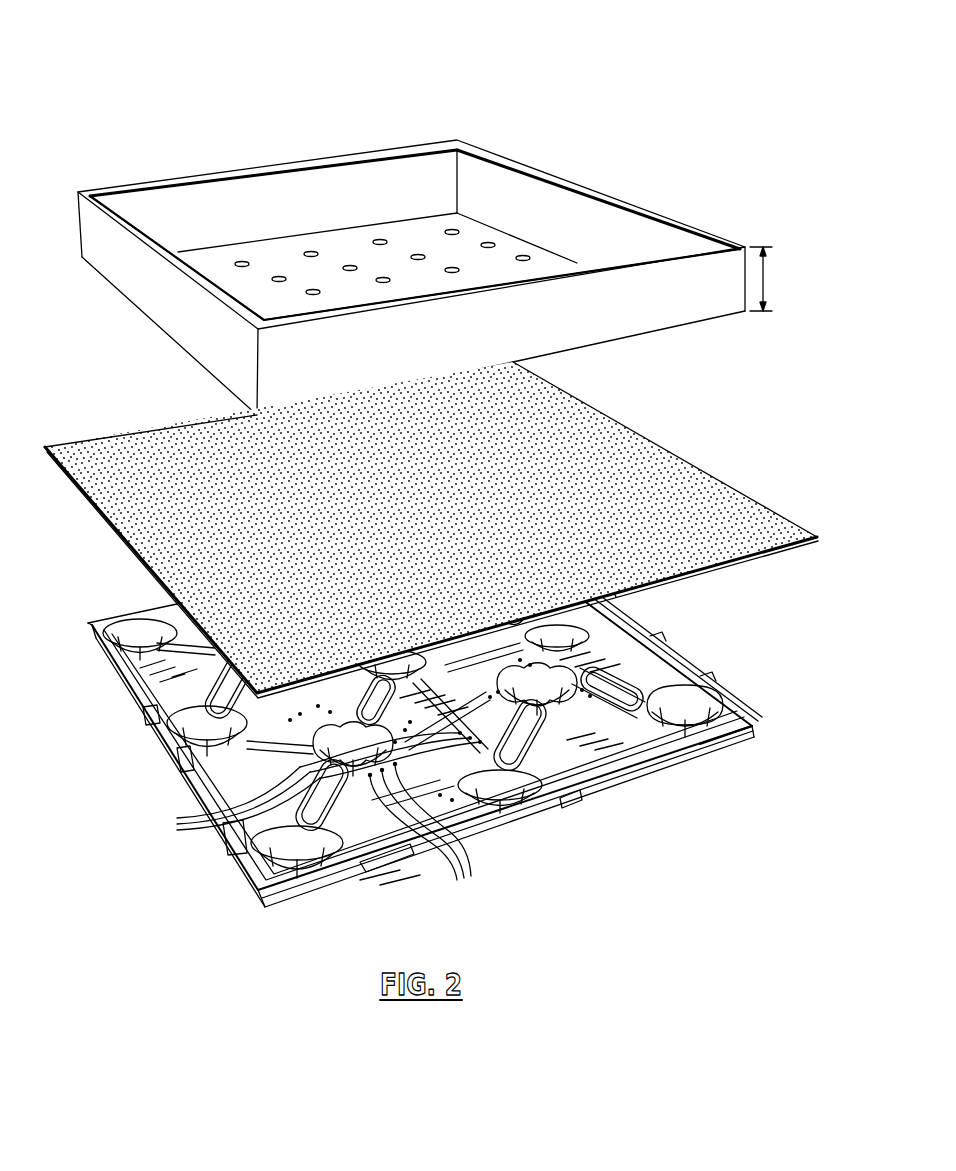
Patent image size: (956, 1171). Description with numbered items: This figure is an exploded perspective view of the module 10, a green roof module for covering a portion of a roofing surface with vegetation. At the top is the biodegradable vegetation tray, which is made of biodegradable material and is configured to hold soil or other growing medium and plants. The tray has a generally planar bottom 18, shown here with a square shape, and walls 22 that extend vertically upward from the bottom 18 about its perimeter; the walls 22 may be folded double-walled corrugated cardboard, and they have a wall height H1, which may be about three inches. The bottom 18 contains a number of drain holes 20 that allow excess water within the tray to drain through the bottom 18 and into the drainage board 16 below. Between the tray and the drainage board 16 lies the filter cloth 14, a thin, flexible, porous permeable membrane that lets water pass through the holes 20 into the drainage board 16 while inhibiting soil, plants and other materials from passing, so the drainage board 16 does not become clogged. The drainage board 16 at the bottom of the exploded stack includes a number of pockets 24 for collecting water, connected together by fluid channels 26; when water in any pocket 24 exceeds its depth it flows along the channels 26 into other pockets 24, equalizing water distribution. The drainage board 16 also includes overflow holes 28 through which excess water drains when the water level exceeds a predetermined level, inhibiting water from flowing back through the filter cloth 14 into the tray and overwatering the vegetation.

The module 10 is at (168, 72).
The filter cloth 14 is at (668, 475).
The drainage board 16 is at (622, 652).
The bottom 18 is at (268, 253).
The drain holes 20 is at (417, 255).
The walls 22 is at (312, 193).
The pockets 24 is at (703, 724).
The fluid channels 26 is at (630, 695).
The overflow holes 28 is at (315, 820).
The wall height H1 is at (765, 268).